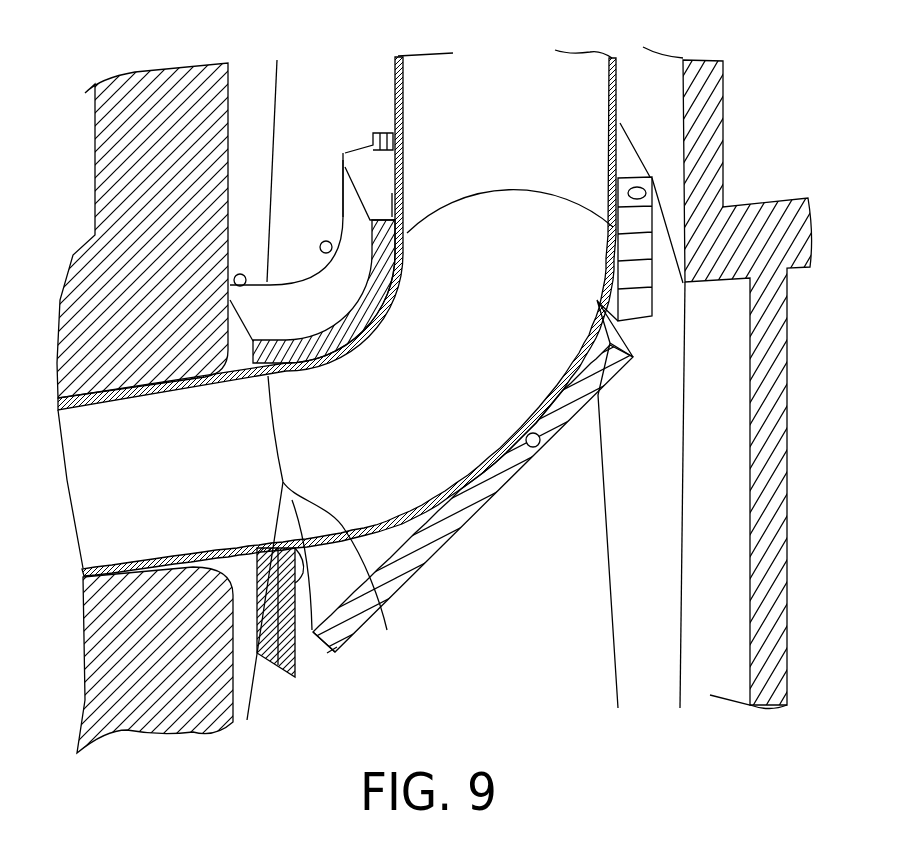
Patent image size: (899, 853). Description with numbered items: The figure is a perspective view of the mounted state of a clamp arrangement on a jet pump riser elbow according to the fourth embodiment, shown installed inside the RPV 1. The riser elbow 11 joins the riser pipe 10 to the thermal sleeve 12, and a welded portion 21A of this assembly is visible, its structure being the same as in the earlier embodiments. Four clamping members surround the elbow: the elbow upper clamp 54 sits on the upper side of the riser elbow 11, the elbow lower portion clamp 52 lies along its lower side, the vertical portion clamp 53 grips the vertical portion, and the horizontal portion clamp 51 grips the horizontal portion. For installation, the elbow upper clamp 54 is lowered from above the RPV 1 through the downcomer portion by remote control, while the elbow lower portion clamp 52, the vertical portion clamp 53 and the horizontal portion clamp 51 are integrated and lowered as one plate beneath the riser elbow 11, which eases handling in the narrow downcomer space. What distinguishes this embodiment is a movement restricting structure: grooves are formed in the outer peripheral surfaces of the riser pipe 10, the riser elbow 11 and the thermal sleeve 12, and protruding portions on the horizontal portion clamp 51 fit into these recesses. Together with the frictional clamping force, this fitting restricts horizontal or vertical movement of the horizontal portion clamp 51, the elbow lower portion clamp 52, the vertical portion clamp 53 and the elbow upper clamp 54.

The RPV 1 is at (168, 82).
The riser pipe 10 is at (446, 62).
The riser elbow 11 is at (373, 480).
The thermal sleeve 12 is at (100, 483).
The welded portion 21A is at (336, 648).
The horizontal portion clamp 51 is at (275, 660).
The elbow lower portion clamp 52 is at (477, 510).
The vertical portion clamp 53 is at (633, 172).
The elbow upper clamp 54 is at (352, 165).